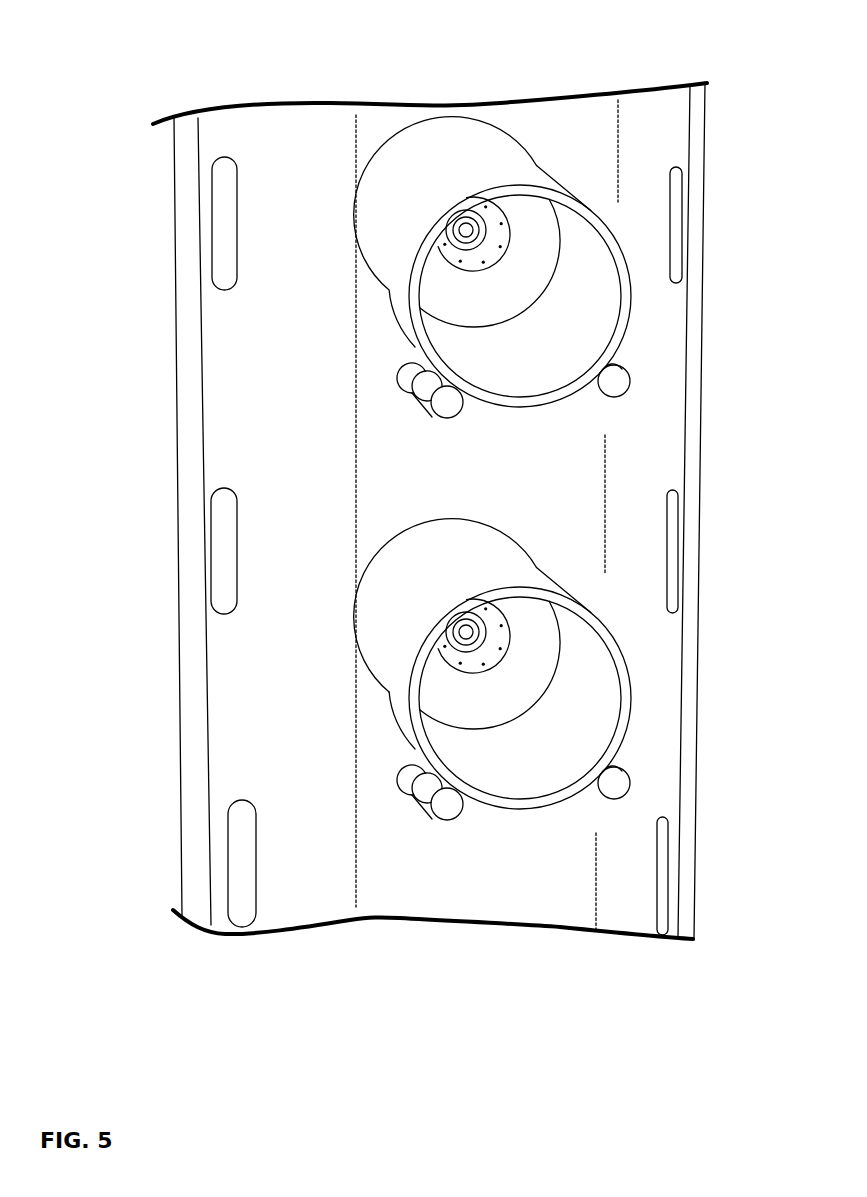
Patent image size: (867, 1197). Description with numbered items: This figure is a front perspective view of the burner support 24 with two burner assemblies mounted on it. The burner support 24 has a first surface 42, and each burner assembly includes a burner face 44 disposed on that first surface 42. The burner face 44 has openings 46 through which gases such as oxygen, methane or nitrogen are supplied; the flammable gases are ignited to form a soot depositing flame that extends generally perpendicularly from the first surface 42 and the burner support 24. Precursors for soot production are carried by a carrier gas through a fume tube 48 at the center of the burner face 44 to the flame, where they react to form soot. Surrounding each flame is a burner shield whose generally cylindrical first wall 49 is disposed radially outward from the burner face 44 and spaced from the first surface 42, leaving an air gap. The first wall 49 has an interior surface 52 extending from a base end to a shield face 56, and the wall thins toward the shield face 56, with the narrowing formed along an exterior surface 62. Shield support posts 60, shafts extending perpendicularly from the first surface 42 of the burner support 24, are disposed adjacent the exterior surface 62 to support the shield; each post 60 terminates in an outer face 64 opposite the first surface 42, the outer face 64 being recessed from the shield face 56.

The burner support 24 is at (340, 98).
The first surface 42 is at (443, 500).
The burner face 44 is at (510, 233).
The openings 46 is at (480, 262).
The fume tube 48 is at (466, 224).
The first wall 49 is at (537, 157).
The interior surface 52 is at (460, 350).
The shield face 56 is at (633, 327).
The shield support post 60 is at (421, 405).
The exterior surface 62 is at (397, 675).
The outer face 64 is at (631, 385).